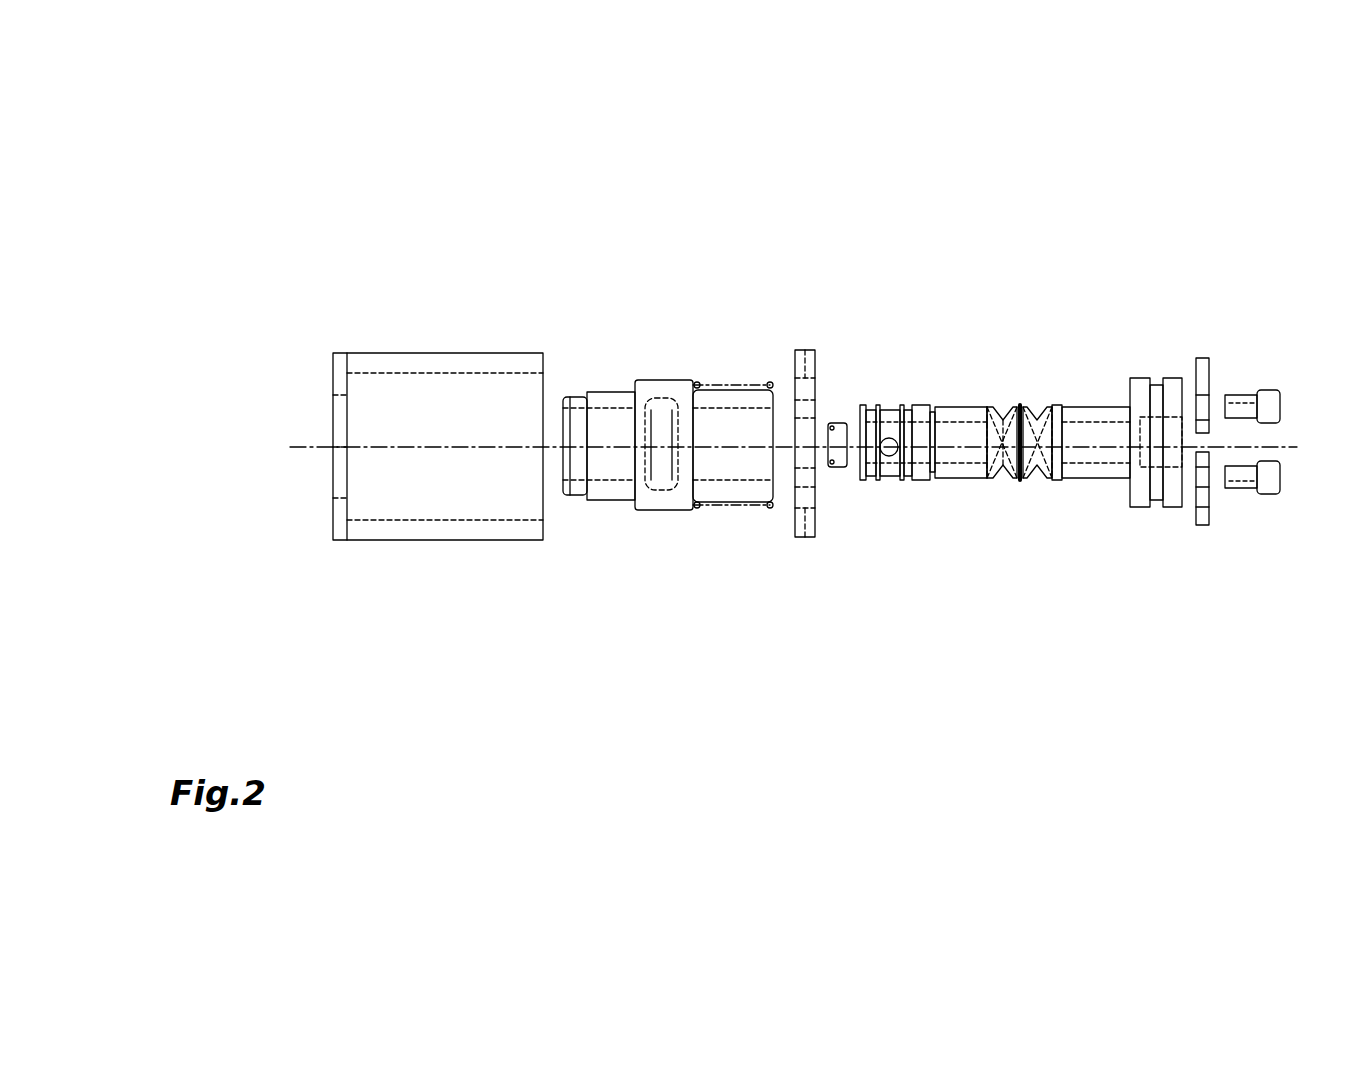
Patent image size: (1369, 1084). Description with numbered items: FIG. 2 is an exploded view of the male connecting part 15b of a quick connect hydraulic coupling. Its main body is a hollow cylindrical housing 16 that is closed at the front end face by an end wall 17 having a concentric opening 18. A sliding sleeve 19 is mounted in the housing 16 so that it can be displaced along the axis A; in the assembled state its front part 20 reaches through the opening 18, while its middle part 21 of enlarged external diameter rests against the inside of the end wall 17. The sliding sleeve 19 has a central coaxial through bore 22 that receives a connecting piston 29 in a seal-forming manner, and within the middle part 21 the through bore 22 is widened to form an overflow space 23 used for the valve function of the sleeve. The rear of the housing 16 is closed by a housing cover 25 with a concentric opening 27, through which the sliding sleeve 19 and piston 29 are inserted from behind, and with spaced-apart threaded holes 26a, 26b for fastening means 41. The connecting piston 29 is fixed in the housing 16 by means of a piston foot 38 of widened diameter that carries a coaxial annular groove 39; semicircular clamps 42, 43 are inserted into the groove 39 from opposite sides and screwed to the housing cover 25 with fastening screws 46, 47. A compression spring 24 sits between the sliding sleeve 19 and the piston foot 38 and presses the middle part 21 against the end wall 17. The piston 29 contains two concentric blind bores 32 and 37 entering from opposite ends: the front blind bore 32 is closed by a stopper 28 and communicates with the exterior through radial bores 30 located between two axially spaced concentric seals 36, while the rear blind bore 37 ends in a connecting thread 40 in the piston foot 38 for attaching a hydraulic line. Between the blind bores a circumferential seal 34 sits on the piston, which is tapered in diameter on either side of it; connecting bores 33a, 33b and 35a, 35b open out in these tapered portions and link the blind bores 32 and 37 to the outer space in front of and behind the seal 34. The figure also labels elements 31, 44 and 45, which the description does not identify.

The axis A is at (300, 447).
The male connecting part 15b is at (1105, 480).
The hollow cylindrical housing 16 is at (379, 399).
The end wall 17 is at (338, 370).
The concentric opening 18 is at (335, 502).
The sliding sleeve 19 is at (656, 405).
The front part 20 is at (587, 398).
The middle part 21 is at (620, 520).
The through bore 22 is at (618, 407).
The overflow space 23 is at (658, 490).
The compression spring 24 is at (745, 503).
The housing cover 25 is at (776, 405).
The threaded hole 26a is at (807, 480).
The threaded hole 26b is at (803, 403).
The concentric opening 27 is at (807, 375).
The stopper 28 is at (840, 407).
The connecting piston 29 is at (1004, 402).
The radial bore 30 is at (882, 480).
The collar 31 is at (900, 420).
The front blind bore 32 is at (948, 478).
The connecting bore 33a is at (993, 412).
The connecting bore 33b is at (993, 477).
The circumferential seal 34 is at (1020, 403).
The connecting bore 35a is at (1045, 412).
The connecting bore 35b is at (1045, 476).
The concentric seal 36 is at (900, 478).
The rear blind bore 37 is at (1110, 468).
The piston foot 38 is at (1140, 385).
The annular groove 39 is at (1157, 380).
The connecting thread 40 is at (1173, 470).
The fastening means 41 is at (1270, 401).
The semicircular clamp 42 is at (1206, 524).
The semicircular clamp 43 is at (1205, 363).
The bar segment 44 is at (1208, 483).
The bar segment 45 is at (1207, 403).
The fastening screw 46 is at (1270, 488).
The fastening screw 47 is at (1273, 400).